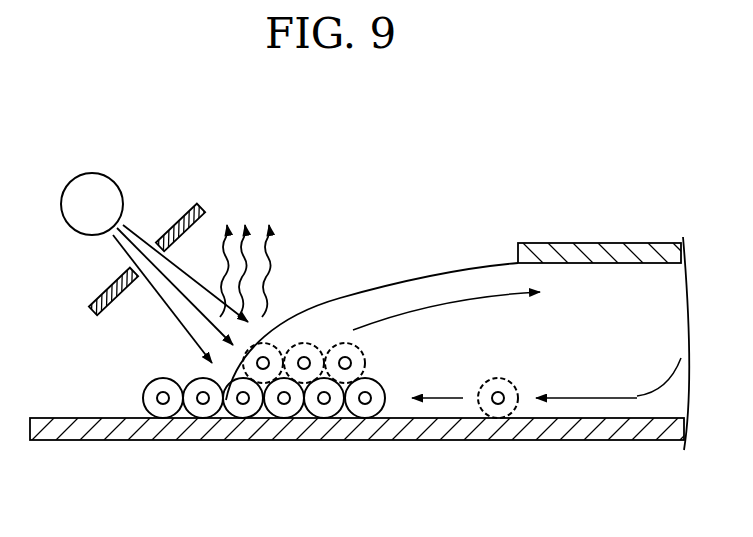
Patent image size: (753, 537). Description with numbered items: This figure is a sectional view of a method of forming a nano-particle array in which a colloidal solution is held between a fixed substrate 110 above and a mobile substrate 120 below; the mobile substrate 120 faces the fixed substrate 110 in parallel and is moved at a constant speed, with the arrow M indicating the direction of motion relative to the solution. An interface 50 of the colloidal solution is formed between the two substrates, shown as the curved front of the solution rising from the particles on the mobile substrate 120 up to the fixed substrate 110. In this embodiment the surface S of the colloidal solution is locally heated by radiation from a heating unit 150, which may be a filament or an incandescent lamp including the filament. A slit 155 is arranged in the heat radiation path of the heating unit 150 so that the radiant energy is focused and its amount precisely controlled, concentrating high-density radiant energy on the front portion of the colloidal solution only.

The heating unit 150 is at (93, 185).
The slit 155 is at (197, 201).
The interface 50 is at (405, 277).
The movement direction of material M is at (478, 296).
The fixed substrate 110 is at (607, 246).
The mobile substrate 120 is at (586, 428).
The surface S is at (644, 390).